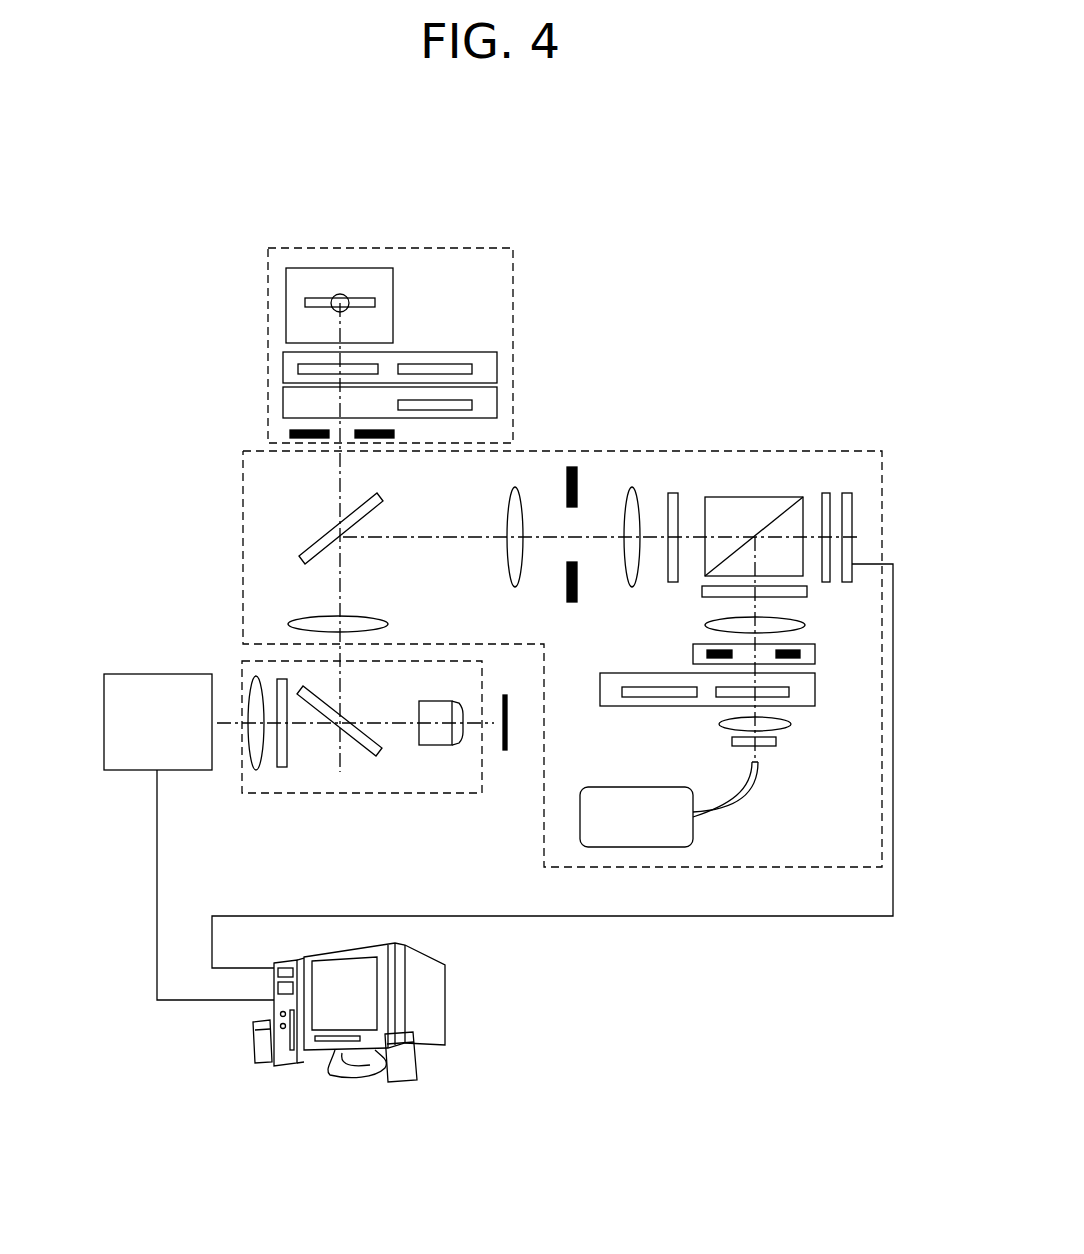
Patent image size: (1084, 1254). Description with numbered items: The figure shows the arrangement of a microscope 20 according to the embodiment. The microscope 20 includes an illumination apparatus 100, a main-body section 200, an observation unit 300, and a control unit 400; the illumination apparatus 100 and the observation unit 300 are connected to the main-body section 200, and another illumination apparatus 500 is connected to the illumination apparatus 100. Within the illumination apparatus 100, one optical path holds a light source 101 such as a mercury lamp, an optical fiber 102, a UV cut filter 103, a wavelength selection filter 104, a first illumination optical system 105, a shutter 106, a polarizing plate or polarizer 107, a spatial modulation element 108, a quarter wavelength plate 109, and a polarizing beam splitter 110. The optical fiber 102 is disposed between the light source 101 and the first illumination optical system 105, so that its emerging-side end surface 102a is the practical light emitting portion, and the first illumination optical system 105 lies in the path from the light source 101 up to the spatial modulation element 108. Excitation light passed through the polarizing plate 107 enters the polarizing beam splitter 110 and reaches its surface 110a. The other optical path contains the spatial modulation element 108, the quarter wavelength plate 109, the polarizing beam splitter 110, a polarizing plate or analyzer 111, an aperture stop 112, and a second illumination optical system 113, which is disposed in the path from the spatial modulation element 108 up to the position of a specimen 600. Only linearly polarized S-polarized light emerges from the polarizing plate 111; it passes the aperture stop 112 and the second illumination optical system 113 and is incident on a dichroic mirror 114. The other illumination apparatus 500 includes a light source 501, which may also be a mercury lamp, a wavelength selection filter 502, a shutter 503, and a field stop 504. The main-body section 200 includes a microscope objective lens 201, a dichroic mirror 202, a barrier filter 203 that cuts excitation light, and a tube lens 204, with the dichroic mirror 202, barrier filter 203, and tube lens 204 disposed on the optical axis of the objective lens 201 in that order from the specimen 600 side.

The microscope 20 is at (515, 183).
The illumination apparatus 100 is at (707, 448).
The light source 101 is at (640, 847).
The optical fiber 102 is at (719, 788).
The emerging-side end surface 102a is at (752, 763).
The UV cut filter 103 is at (770, 744).
The wavelength selection filter 104 is at (613, 706).
The first illumination optical system 105 is at (814, 728).
The shutter 106 is at (693, 653).
The polarizing plate (polarizer) 107 is at (702, 592).
The spatial modulation element 108 is at (847, 493).
The quarter wavelength plate 109 is at (826, 493).
The polarizing beam splitter 110 is at (762, 477).
The surface of polarizing beam splitter 110a is at (773, 520).
The polarizing plate (analyzer) 111 is at (673, 493).
The aperture stop 112 is at (572, 467).
The second illumination optical system 113 is at (500, 570).
The dichroic mirror 114 is at (300, 558).
The main-body section 200 is at (413, 793).
The microscope objective lens 201 is at (447, 745).
The dichroic mirror 202 is at (345, 740).
The barrier filter 203 is at (281, 765).
The tube lens 204 is at (255, 767).
The observation unit 300 is at (125, 685).
The control unit 400 is at (448, 970).
The illumination apparatus 500 is at (513, 255).
The light source 501 is at (325, 270).
The wavelength selection filter 502 is at (283, 365).
The shutter 503 is at (285, 400).
The field stop 504 is at (290, 436).
The specimen 600 is at (505, 750).